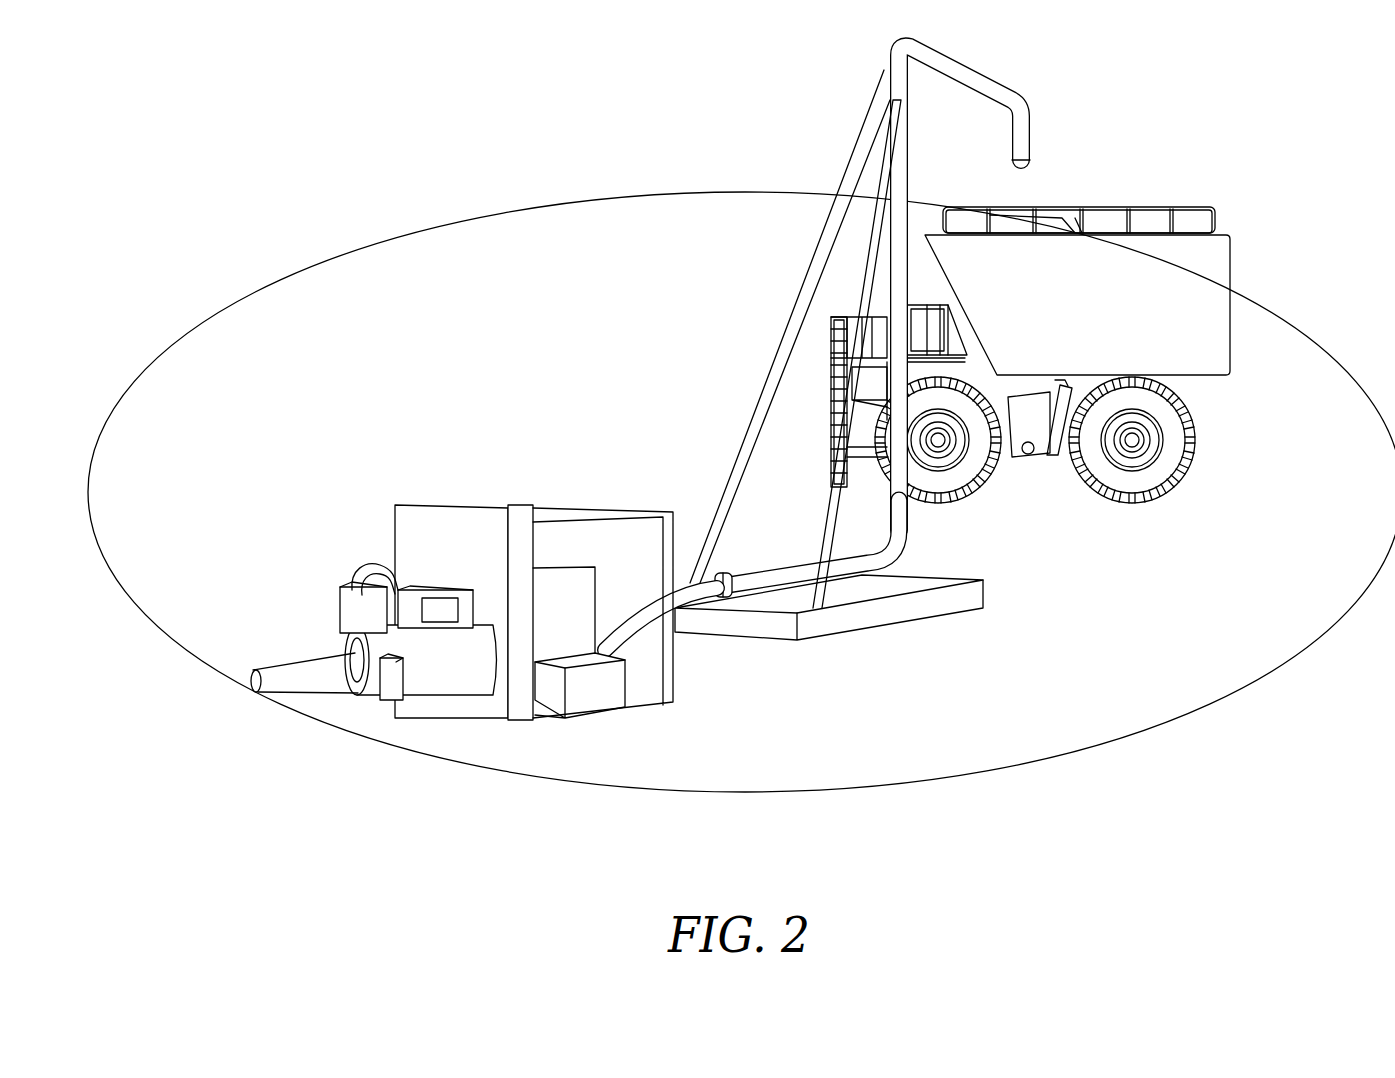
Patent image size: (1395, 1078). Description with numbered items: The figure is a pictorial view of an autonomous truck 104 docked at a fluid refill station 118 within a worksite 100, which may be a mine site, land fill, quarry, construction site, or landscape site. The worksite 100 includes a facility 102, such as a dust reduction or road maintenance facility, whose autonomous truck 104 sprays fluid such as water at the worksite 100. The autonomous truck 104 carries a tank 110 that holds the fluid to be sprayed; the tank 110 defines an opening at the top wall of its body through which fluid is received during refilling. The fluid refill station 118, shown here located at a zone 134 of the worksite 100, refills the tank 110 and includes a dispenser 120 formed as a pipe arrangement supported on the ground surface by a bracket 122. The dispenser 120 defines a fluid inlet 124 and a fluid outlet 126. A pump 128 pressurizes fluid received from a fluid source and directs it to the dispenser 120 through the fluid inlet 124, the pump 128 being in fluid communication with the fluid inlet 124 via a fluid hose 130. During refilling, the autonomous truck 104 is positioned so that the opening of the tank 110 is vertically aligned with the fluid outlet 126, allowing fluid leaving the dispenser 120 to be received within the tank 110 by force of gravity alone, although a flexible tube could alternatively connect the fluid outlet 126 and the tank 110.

The worksite 100 is at (140, 313).
The facility 102 is at (1292, 146).
The autonomous truck 104 is at (1244, 257).
The tank 110 is at (1062, 222).
The fluid refill station 118 is at (834, 88).
The dispenser 120 is at (892, 546).
The bracket 122 is at (867, 615).
The fluid inlet 124 is at (720, 578).
The fluid outlet 126 is at (1032, 170).
The pump 128 is at (487, 700).
The fluid hose 130 is at (689, 593).
The zone 134 is at (353, 253).